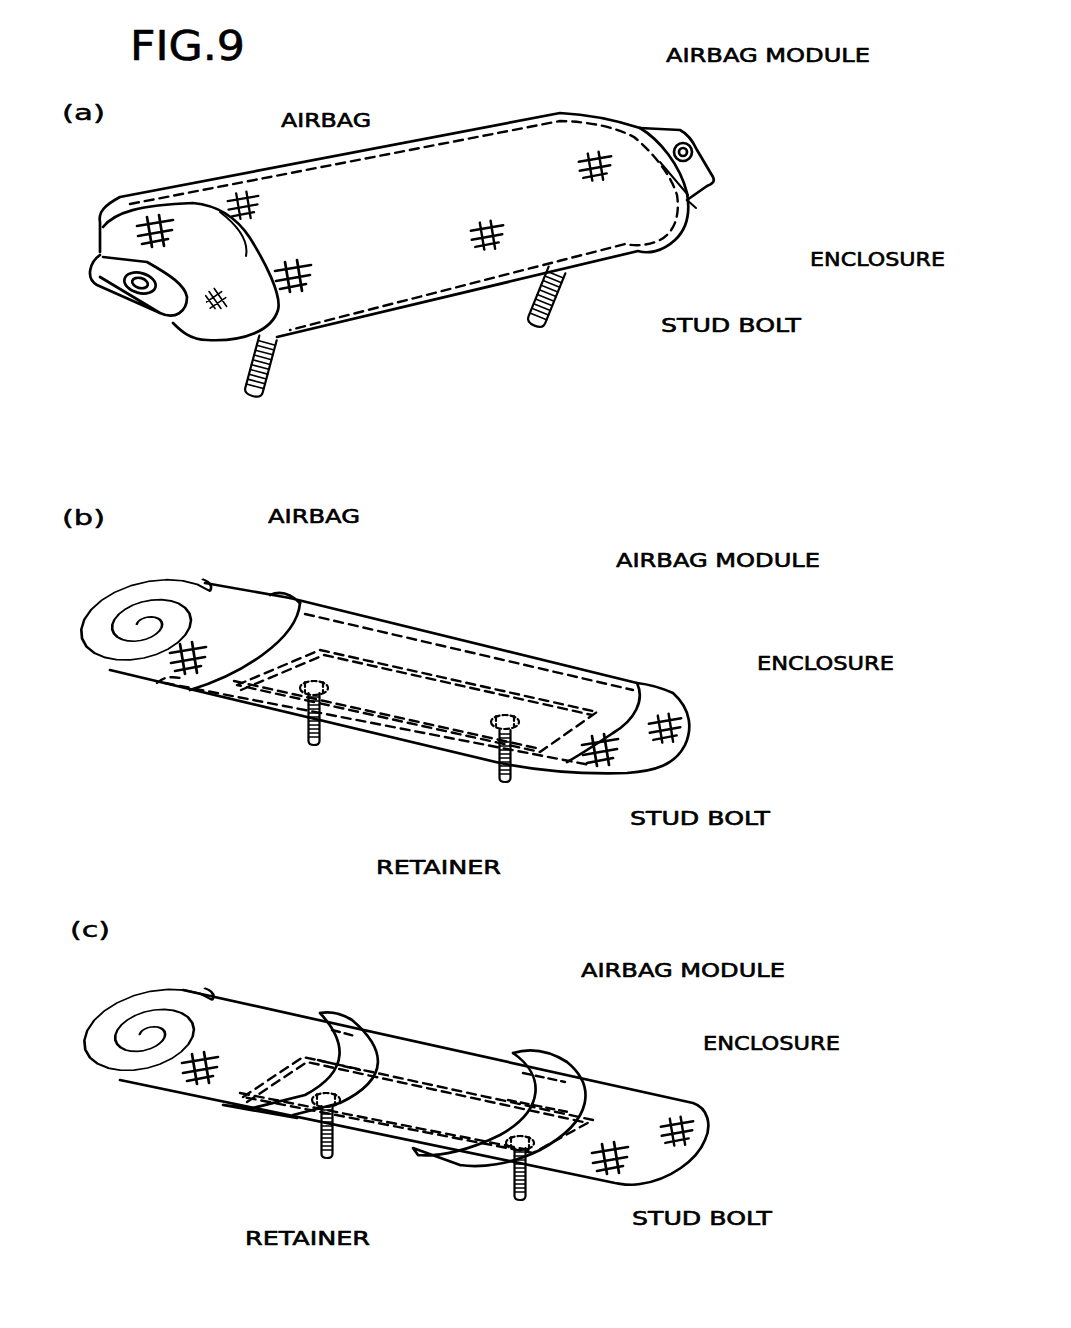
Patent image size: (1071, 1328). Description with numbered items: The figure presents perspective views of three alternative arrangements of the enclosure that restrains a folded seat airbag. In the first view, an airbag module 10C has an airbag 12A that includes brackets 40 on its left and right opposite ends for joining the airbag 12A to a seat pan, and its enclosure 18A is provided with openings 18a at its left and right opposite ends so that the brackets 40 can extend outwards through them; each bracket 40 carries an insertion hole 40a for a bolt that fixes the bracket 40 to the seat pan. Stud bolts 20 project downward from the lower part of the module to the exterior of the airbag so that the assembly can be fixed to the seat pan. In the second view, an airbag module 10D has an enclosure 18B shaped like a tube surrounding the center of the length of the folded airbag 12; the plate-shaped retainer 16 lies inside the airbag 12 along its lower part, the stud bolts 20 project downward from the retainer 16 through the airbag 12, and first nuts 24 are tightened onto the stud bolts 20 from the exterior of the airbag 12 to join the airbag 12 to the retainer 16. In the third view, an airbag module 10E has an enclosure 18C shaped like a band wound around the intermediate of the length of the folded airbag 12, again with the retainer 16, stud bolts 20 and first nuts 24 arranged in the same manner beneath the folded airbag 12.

The airbag module 10C is at (523, 90).
The airbag module 10D is at (476, 596).
The airbag module 10E is at (452, 1008).
The airbag 12 is at (230, 587).
The airbag 12A is at (215, 240).
The retainer 16 is at (437, 712).
The enclosure 18A is at (627, 250).
The enclosure 18B is at (600, 660).
The enclosure 18C is at (358, 1020).
The opening 18a is at (248, 239).
The stud bolt 20 is at (278, 378).
The first nut 24 is at (512, 718).
The bracket 40 is at (150, 318).
The insertion hole 40a is at (125, 285).